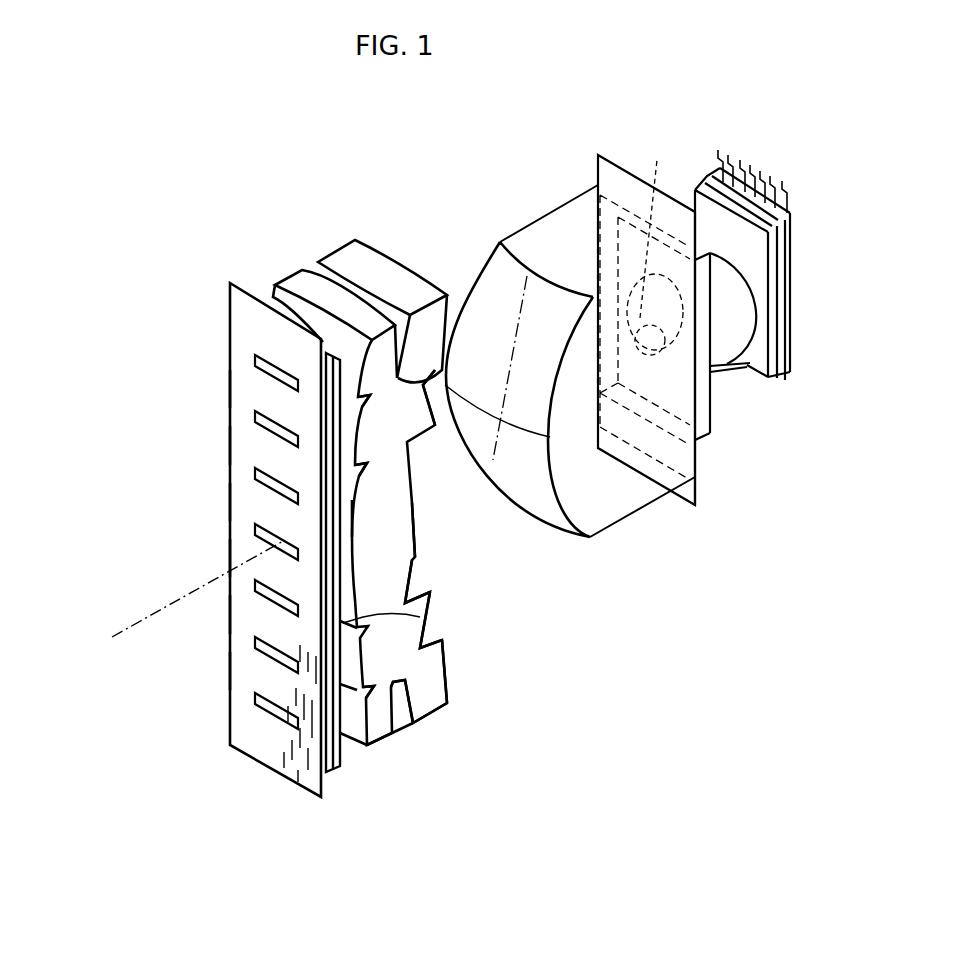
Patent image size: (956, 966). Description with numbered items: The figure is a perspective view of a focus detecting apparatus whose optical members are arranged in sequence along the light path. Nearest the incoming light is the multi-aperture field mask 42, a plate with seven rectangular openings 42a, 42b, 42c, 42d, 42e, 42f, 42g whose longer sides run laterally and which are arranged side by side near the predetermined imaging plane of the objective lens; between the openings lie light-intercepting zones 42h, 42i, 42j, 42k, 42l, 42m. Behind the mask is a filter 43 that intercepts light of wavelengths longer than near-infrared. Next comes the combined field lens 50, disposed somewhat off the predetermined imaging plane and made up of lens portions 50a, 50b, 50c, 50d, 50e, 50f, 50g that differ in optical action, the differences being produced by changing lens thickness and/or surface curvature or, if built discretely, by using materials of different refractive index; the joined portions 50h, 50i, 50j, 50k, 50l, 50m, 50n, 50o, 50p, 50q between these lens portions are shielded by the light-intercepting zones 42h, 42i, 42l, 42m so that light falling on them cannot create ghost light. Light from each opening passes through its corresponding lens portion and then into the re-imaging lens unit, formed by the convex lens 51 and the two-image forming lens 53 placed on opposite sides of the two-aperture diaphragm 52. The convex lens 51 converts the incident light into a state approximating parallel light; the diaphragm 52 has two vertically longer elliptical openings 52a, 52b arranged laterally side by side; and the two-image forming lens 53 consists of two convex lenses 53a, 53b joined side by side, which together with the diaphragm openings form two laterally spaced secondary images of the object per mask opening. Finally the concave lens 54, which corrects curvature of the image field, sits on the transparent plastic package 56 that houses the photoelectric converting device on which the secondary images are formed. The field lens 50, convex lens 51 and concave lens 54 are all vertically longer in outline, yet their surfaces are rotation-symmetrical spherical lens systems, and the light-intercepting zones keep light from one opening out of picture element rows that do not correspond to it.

The multi-aperture field mask 42 is at (280, 768).
The opening 42a is at (255, 358).
The opening 42b is at (257, 420).
The opening 42c is at (252, 472).
The opening 42d is at (250, 530).
The opening 42e is at (252, 585).
The opening 42f is at (257, 641).
The opening 42g is at (235, 749).
The light-intercepting zone 42h is at (252, 387).
The light-intercepting zone 42i is at (255, 445).
The light-intercepting zone 42j is at (255, 500).
The light-intercepting zone 42k is at (245, 553).
The light-intercepting zone 42l is at (252, 618).
The light-intercepting zone 42m is at (257, 681).
The filter 43 is at (333, 773).
The combined field lens 50 is at (386, 518).
The lens portion 50a is at (295, 308).
The lens portion 50b is at (328, 273).
The lens portion 50c is at (352, 400).
The lens portion 50d is at (350, 528).
The lens portion 50e is at (427, 645).
The lens portion 50f is at (364, 748).
The lens portion 50g is at (398, 712).
The joined portion 50h is at (441, 288).
The joined portion 50i is at (362, 398).
The joined portion 50j is at (453, 390).
The joined portion 50k is at (362, 477).
The joined portion 50l is at (418, 512).
The joined portion 50m is at (420, 617).
The joined portion 50n is at (432, 593).
The joined portion 50o is at (362, 688).
The joined portion 50p is at (440, 642).
The joined portion 50q is at (437, 696).
The convex lens 51 is at (647, 490).
The two-aperture diaphragm 52 is at (697, 495).
The elliptical opening 52a is at (645, 332).
The elliptical opening 52b is at (633, 398).
The two-image forming lens 53 is at (713, 428).
The convex lens 53a is at (658, 224).
The convex lens 53b is at (690, 300).
The concave lens 54 is at (748, 391).
The transparent plastic package 56 is at (790, 347).